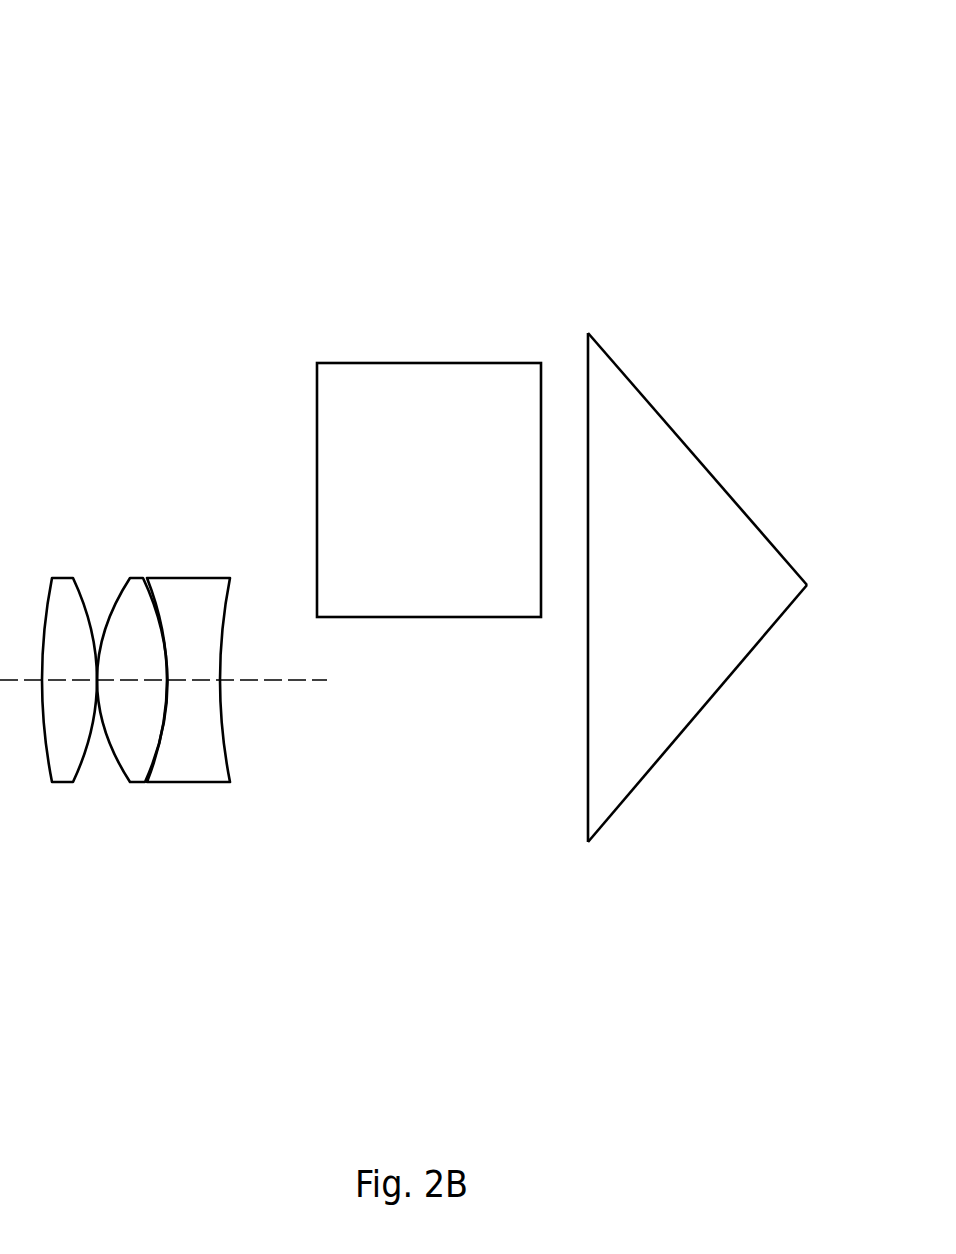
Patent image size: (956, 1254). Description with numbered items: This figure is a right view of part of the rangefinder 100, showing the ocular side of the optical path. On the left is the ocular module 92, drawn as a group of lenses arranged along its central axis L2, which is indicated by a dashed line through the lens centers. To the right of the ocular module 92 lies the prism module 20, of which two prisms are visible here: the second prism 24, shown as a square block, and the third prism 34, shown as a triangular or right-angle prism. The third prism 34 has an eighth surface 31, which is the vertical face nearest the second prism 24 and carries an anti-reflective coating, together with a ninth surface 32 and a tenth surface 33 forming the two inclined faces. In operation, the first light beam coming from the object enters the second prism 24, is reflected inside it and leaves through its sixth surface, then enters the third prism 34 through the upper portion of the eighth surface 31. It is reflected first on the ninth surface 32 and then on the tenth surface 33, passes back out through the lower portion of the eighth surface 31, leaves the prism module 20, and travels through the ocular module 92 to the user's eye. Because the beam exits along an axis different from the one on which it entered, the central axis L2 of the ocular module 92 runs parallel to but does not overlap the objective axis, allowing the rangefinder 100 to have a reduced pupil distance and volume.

The rangefinder 100 is at (132, 50).
The prism module 20 is at (432, 250).
The second prism 24 is at (351, 395).
The eighth surface 31 is at (587, 390).
The ninth surface 32 is at (697, 458).
The tenth surface 33 is at (668, 748).
The third prism 34 is at (622, 418).
The ocular module 92 is at (130, 650).
The central axis of the ocular module L2 is at (255, 680).